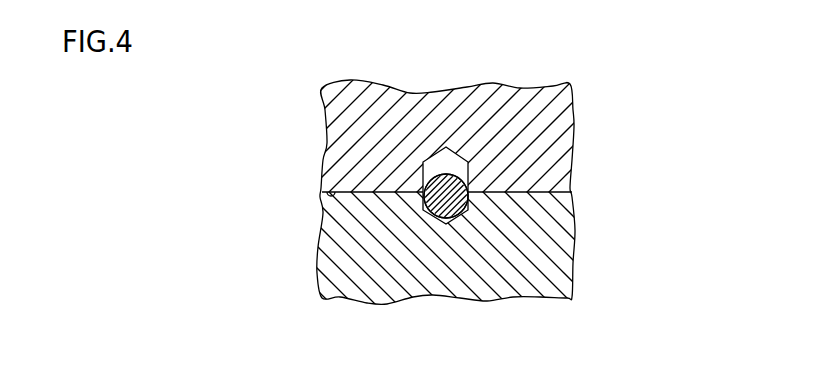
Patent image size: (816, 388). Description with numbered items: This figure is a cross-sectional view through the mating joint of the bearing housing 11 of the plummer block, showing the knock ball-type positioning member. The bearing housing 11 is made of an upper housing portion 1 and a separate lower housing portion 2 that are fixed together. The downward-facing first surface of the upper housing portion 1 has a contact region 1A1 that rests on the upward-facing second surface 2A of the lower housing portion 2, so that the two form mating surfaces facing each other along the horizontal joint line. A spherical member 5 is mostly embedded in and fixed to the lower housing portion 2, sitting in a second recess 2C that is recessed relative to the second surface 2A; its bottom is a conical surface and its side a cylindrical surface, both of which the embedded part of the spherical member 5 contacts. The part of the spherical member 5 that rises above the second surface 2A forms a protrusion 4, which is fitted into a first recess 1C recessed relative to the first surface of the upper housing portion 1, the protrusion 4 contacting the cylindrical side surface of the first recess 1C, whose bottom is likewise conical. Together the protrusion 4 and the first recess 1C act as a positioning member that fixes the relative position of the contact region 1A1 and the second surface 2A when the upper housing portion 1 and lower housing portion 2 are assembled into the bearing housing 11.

The bearing housing 11 is at (313, 108).
The upper housing portion 1 is at (540, 122).
The lower housing portion 2 is at (540, 262).
The contact region 1A1 is at (328, 192).
The second surface 2A is at (553, 192).
The first recess 1C is at (450, 150).
The second recess 2C is at (447, 212).
The protrusion 4 is at (460, 186).
The spherical member 5 is at (462, 198).